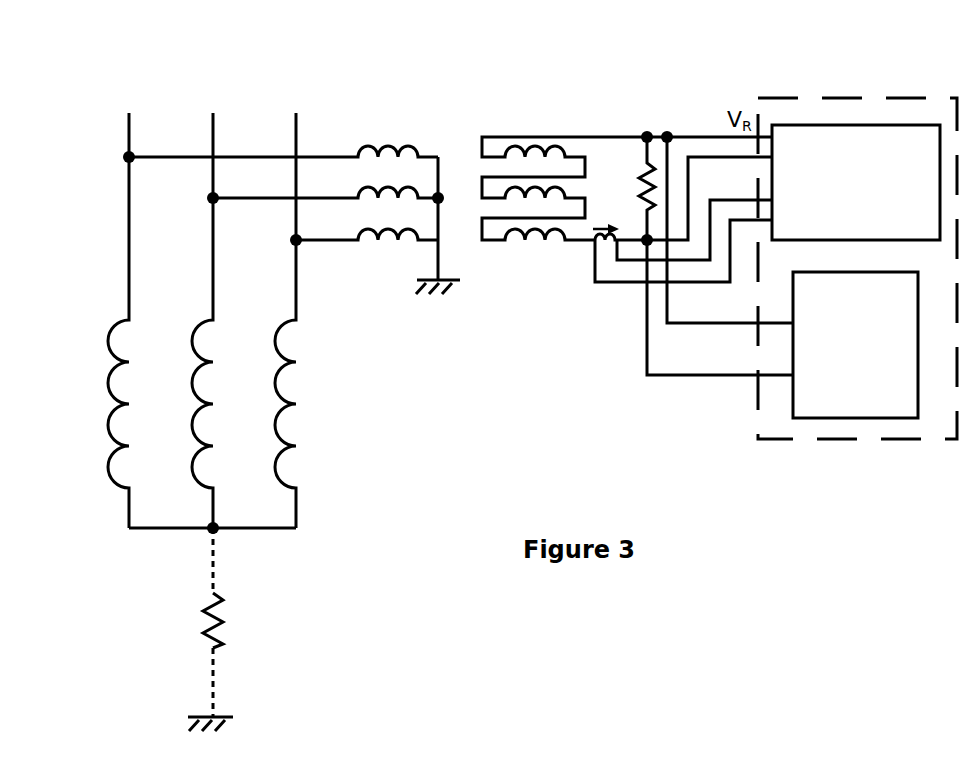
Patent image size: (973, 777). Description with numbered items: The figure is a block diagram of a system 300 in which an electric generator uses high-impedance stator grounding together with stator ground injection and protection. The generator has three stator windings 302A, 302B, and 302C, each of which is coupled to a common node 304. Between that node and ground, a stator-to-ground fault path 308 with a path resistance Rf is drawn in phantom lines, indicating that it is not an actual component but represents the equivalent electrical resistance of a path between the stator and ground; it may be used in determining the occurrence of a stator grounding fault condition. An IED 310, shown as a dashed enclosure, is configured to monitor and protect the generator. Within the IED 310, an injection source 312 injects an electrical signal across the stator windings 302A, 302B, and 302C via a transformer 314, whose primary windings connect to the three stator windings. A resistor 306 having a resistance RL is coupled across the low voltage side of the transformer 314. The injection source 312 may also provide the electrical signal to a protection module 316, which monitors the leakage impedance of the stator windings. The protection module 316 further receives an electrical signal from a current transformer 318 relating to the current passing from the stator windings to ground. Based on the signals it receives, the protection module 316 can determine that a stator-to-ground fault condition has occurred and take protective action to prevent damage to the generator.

The system 300 is at (906, 527).
The stator winding 302A is at (129, 512).
The stator winding 302B is at (200, 325).
The stator winding 302C is at (296, 512).
The node 304 is at (215, 532).
The resistor 306 is at (636, 165).
The stator-to-ground fault path 308 is at (203, 626).
The IED 310 is at (868, 96).
The injection source 312 is at (855, 345).
The transformer 314 is at (577, 104).
The protection module 316 is at (856, 182).
The current transformer 318 is at (595, 247).